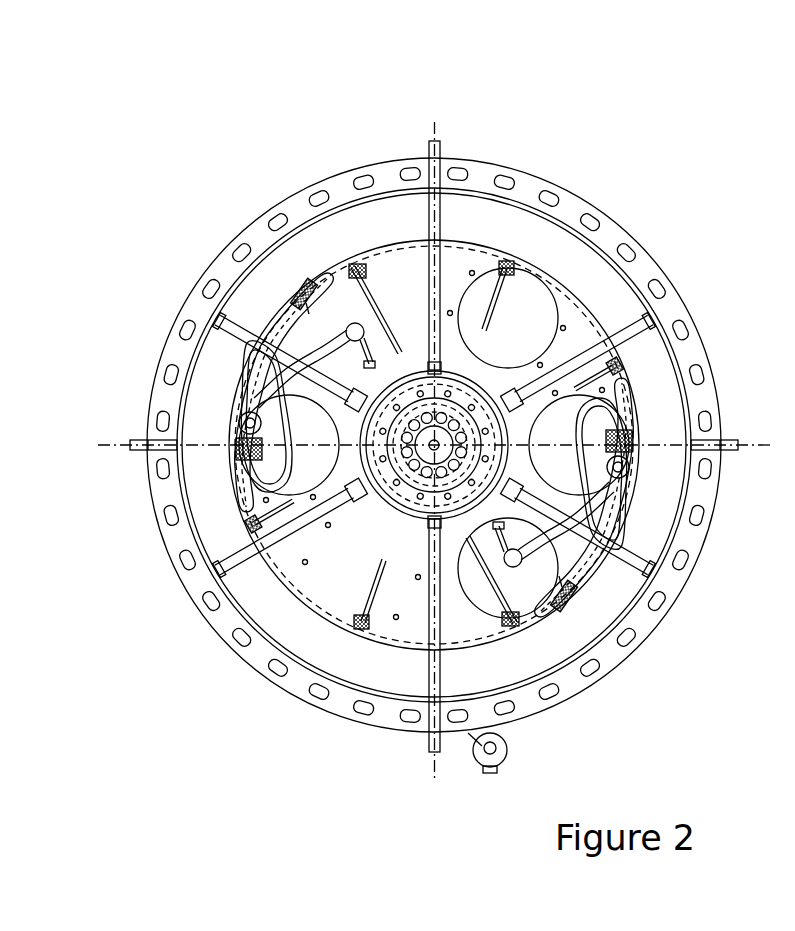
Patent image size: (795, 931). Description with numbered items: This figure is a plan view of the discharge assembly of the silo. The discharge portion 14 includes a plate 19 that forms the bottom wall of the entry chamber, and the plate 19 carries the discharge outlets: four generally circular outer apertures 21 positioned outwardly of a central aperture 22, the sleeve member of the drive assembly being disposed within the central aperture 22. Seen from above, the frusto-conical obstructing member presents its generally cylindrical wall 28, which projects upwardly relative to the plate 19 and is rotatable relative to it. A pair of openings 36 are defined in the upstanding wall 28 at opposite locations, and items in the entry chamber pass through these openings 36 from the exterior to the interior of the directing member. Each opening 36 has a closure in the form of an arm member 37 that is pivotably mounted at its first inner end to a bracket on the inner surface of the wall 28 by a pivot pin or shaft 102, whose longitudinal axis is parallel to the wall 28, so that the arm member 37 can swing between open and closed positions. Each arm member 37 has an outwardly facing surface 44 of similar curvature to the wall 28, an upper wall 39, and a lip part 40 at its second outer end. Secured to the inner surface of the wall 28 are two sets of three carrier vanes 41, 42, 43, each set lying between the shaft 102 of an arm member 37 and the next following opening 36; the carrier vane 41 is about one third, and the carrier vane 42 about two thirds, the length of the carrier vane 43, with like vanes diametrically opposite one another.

The discharge portion 14 is at (794, 300).
The plate 19 is at (316, 576).
The outer apertures 21 is at (538, 308).
The central aperture 22 is at (580, 303).
The cylindrical wall 28 is at (560, 318).
The openings 36 is at (300, 302).
The arm member 37 is at (268, 365).
The upper wall 39 is at (327, 315).
The lip part 40 is at (316, 294).
The carrier vane 41 is at (600, 363).
The carrier vane 42 is at (488, 318).
The carrier vane 43 is at (376, 320).
The outwardly facing surface 44 is at (582, 527).
The pivot pin or shaft 102 is at (242, 416).